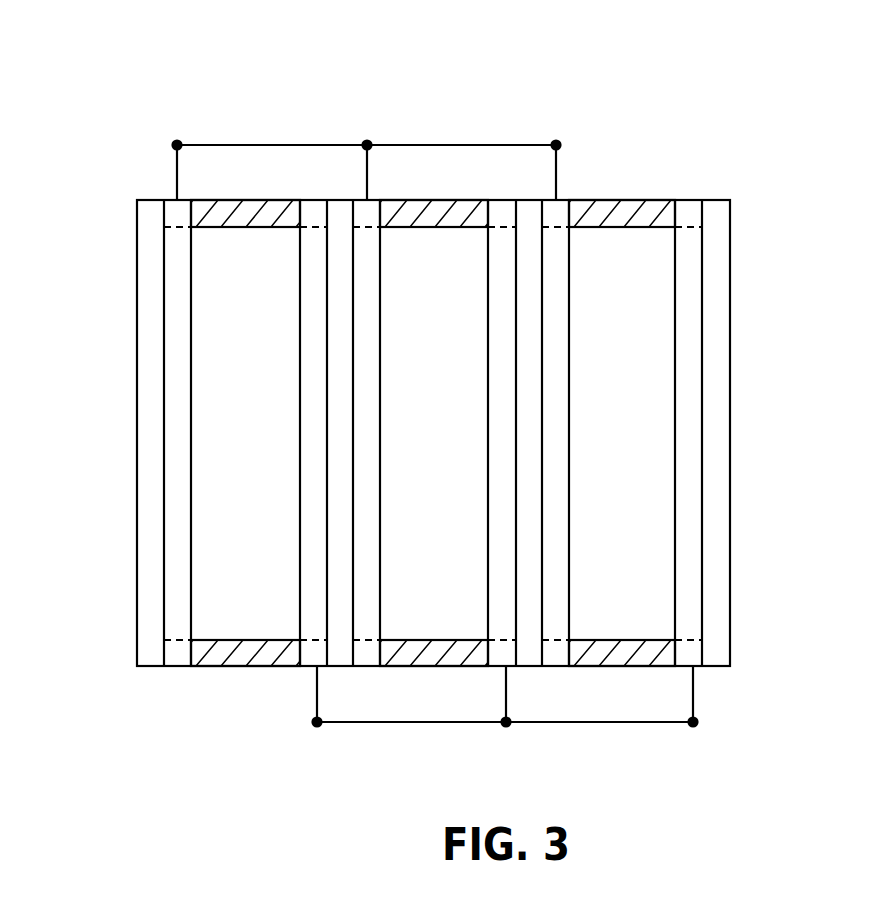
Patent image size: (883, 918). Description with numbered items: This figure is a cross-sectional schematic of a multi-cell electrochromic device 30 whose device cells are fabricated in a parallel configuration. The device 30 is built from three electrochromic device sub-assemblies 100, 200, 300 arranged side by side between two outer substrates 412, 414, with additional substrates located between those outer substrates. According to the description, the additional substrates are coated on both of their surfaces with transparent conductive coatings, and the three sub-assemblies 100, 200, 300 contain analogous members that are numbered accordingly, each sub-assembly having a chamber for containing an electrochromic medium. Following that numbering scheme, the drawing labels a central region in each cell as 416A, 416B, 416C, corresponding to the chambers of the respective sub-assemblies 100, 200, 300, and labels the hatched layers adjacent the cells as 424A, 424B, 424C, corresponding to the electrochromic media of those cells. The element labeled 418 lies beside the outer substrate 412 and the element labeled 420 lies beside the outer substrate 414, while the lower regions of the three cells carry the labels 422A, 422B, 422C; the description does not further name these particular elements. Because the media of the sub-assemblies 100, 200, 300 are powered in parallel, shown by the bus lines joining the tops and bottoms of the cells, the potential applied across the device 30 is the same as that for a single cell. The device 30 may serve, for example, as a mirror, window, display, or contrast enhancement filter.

The multi-cell electrochromic device 30 is at (787, 119).
The electrochromic device sub-assembly 100 is at (209, 92).
The electrochromic device sub-assembly 200 is at (398, 92).
The electrochromic device sub-assembly 300 is at (587, 93).
The substrate 412 is at (155, 399).
The substrate 414 is at (717, 425).
The first cell chamber 416A is at (267, 457).
The second cell chamber 416B is at (457, 457).
The third cell chamber 416C is at (647, 457).
The first current collector 418 is at (177, 373).
The second current collector 420 is at (688, 383).
The first cell lower electrode contact 422A is at (245, 667).
The second cell lower electrode contact 422B is at (435, 667).
The third cell lower electrode contact 422C is at (622, 667).
The first cell lower electrode layer 424A is at (223, 617).
The second cell lower electrode layer 424B is at (413, 618).
The third cell lower electrode layer 424C is at (600, 620).